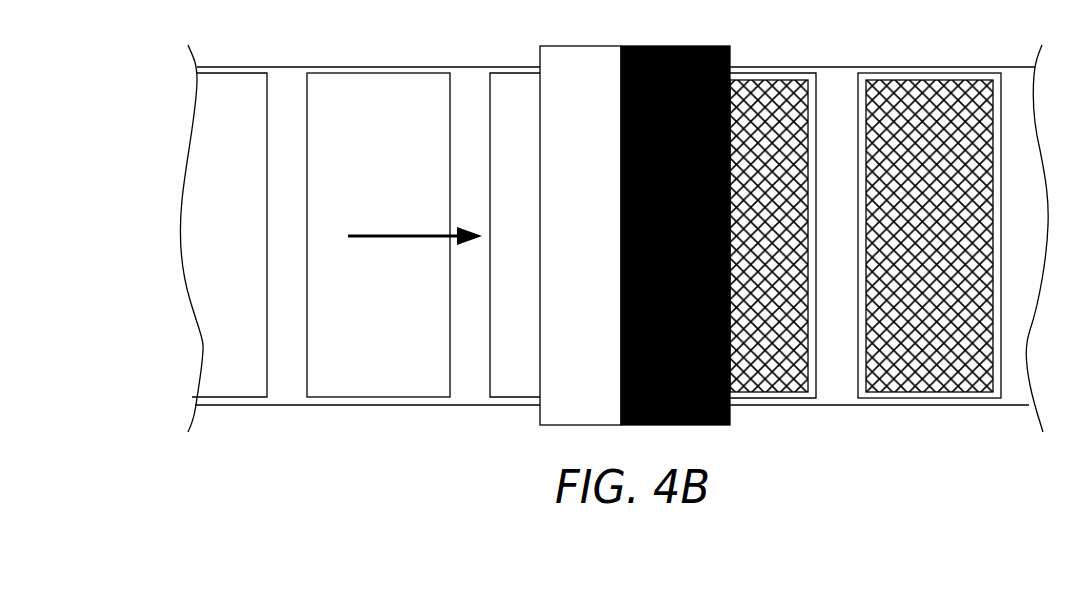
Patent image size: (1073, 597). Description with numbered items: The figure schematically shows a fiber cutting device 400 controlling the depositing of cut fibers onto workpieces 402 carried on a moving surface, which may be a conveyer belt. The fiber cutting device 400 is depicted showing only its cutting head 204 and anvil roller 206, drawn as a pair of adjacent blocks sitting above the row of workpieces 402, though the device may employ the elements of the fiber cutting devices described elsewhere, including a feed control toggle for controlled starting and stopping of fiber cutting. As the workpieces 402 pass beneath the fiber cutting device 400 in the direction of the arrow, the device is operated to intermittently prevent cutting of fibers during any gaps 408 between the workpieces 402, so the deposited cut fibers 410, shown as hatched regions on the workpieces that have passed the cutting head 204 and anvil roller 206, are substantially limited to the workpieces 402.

The fiber cutting device 400 is at (750, 14).
The workpiece 402 is at (494, 72).
The cutting head 204 is at (582, 46).
The anvil roller 206 is at (688, 46).
The gap 408 is at (931, 240).
The deposited cut fibers 410 is at (927, 388).